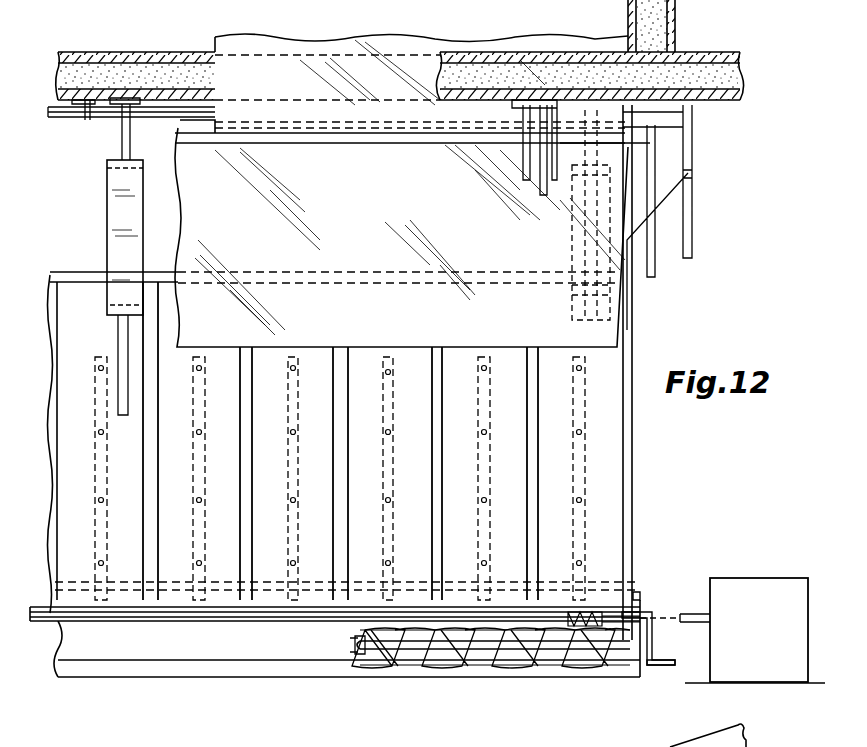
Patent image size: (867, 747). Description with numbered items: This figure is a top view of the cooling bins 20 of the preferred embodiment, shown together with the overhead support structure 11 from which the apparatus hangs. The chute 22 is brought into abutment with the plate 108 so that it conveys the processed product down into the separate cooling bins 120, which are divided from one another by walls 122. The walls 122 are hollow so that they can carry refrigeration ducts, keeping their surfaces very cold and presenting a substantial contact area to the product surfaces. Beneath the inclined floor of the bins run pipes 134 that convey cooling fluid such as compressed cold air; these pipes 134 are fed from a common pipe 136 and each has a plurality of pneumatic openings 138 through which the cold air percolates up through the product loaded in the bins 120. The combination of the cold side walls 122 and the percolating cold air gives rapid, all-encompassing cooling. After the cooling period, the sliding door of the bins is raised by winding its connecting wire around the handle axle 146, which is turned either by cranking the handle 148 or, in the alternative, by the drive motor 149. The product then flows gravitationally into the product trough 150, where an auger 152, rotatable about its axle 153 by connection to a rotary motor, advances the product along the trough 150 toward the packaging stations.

The ceiling beam / support structure 11 is at (172, 52).
The plate 108 is at (368, 42).
The chute 22 is at (376, 207).
The pipes 134 is at (205, 395).
The pneumatic openings 138 is at (388, 432).
The cooling bins 120 is at (555, 483).
The cooling bins 20 is at (682, 496).
The walls 122 is at (620, 565).
The common pipe 136 is at (55, 582).
The handle axle 146 is at (638, 615).
The handle 148 is at (666, 668).
The drive motor 149 is at (790, 560).
The product trough 150 is at (471, 675).
The auger 152 is at (550, 665).
The axle 153 is at (375, 650).